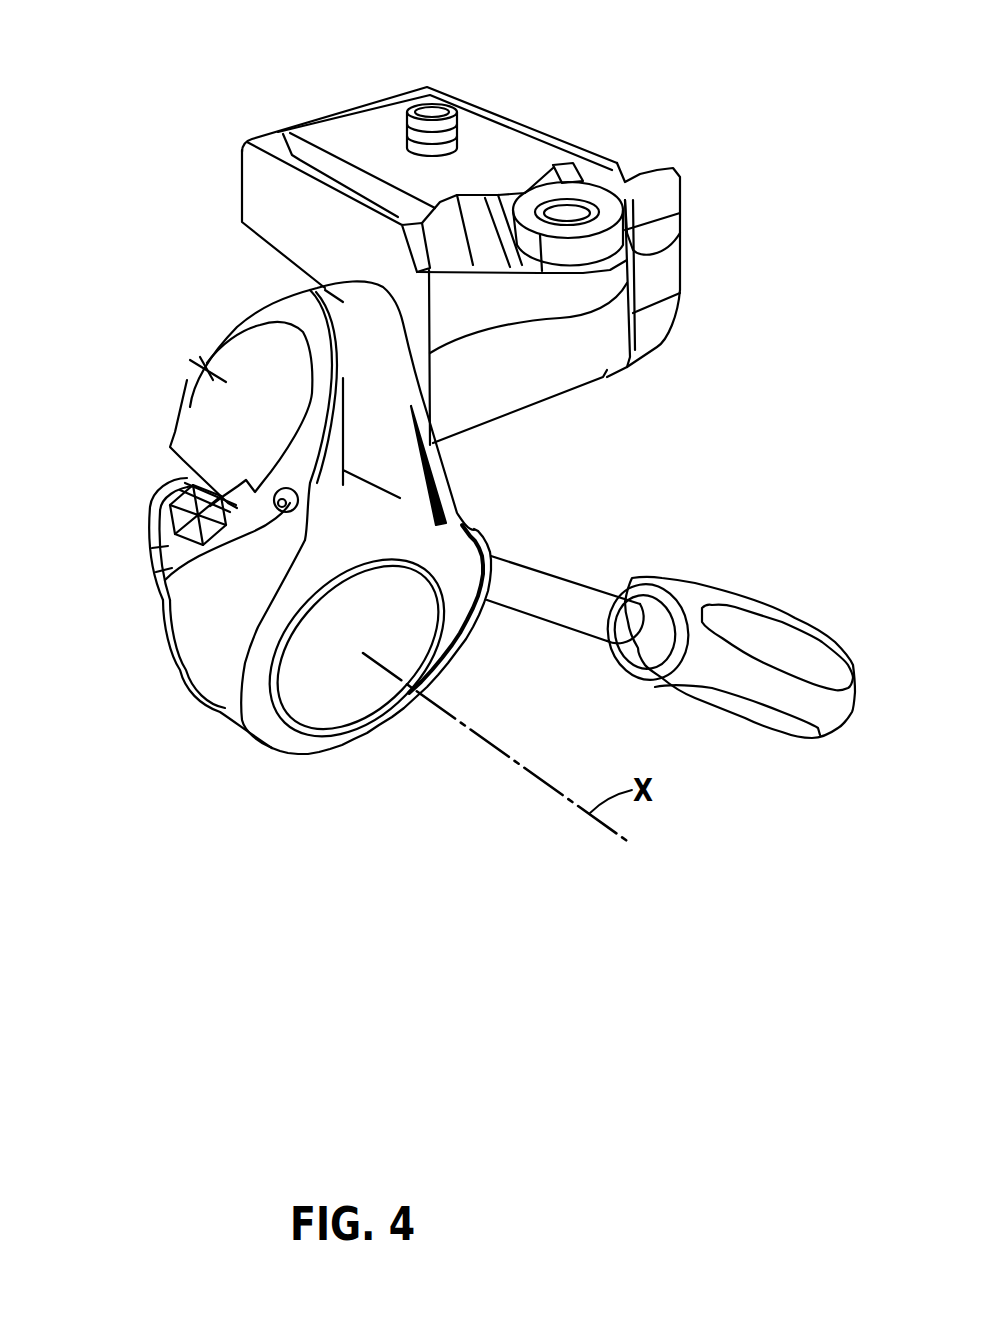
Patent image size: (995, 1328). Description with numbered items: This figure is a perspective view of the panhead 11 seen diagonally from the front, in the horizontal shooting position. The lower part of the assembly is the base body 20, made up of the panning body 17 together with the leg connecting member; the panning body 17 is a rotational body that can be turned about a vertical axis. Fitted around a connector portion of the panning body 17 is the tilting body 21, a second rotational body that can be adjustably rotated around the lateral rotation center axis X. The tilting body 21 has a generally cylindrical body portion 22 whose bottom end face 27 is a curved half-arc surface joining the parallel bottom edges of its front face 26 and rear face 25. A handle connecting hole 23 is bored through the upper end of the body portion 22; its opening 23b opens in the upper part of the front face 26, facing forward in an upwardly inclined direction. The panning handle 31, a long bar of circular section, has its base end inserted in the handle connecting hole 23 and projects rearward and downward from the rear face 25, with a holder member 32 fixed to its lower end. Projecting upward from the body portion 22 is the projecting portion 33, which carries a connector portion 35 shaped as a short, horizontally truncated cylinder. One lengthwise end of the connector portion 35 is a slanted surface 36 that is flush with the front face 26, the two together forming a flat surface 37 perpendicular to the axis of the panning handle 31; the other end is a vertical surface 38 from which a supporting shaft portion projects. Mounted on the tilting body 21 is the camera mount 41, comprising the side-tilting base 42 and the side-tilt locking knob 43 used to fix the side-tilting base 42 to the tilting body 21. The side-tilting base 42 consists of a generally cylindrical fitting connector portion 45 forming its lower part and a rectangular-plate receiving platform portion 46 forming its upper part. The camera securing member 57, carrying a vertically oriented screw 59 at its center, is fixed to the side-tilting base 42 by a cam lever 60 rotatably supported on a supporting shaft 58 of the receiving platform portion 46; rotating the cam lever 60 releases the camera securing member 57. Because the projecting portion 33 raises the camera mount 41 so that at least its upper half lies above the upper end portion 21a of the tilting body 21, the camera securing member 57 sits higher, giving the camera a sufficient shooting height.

The panhead 11 is at (722, 177).
The panning body 17 is at (332, 710).
The base body 20 is at (133, 597).
The tilting body 21 is at (185, 705).
The upper end portion 21a is at (327, 291).
The body portion 22 is at (192, 646).
The handle connecting hole 23 is at (298, 497).
The opening 23b is at (163, 563).
The rear face 25 is at (463, 620).
The front face 26 is at (233, 497).
The bottom end face 27 is at (223, 710).
The panning handle 31 is at (573, 583).
The holder member 32 is at (737, 627).
The projecting portion 33 is at (267, 337).
The connector portion 35 is at (230, 380).
The slanted surface 36 is at (208, 360).
The flat surface 37 is at (203, 413).
The vertical surface 38 is at (440, 457).
The camera mount 41 is at (478, 90).
The side-tilting base 42 is at (263, 137).
The side-tilt locking knob 43 is at (673, 280).
The fitting connector portion 45 is at (557, 373).
The receiving platform portion 46 is at (250, 167).
The camera securing member 57 is at (338, 134).
The supporting shaft 58 is at (577, 216).
The screw 59 is at (402, 120).
The cam lever 60 is at (660, 169).